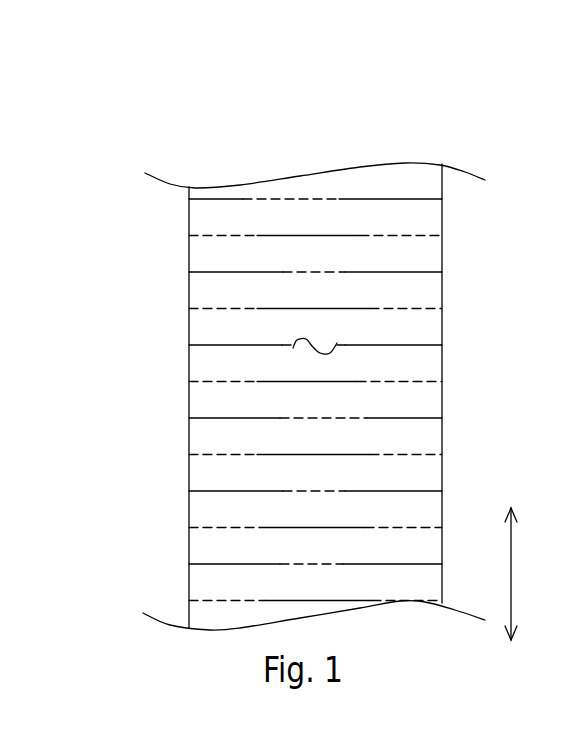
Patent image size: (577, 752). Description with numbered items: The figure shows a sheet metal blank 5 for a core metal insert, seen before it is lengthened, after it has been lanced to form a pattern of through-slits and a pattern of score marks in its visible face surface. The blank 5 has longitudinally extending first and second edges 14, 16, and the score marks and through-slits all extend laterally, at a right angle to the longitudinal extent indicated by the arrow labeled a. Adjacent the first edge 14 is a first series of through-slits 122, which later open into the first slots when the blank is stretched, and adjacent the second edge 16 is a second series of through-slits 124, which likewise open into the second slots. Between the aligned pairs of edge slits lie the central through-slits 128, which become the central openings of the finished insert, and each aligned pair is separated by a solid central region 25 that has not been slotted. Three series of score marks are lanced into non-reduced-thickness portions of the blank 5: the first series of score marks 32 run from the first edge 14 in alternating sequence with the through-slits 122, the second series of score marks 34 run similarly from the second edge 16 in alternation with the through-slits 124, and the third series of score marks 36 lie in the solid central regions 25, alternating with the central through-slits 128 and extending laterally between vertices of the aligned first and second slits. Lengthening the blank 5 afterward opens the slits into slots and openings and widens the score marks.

The sheet metal blank 5 is at (170, 138).
The first edge 14 is at (188, 435).
The second edge 16 is at (442, 405).
The solid central region 25 is at (305, 337).
The first series of score marks 32 is at (213, 602).
The second series of score marks 34 is at (325, 199).
The third series of score marks 36 is at (304, 270).
The first series of through-slits 122 is at (229, 492).
The second series of through-slits 124 is at (408, 563).
The through-slits 128 is at (335, 527).